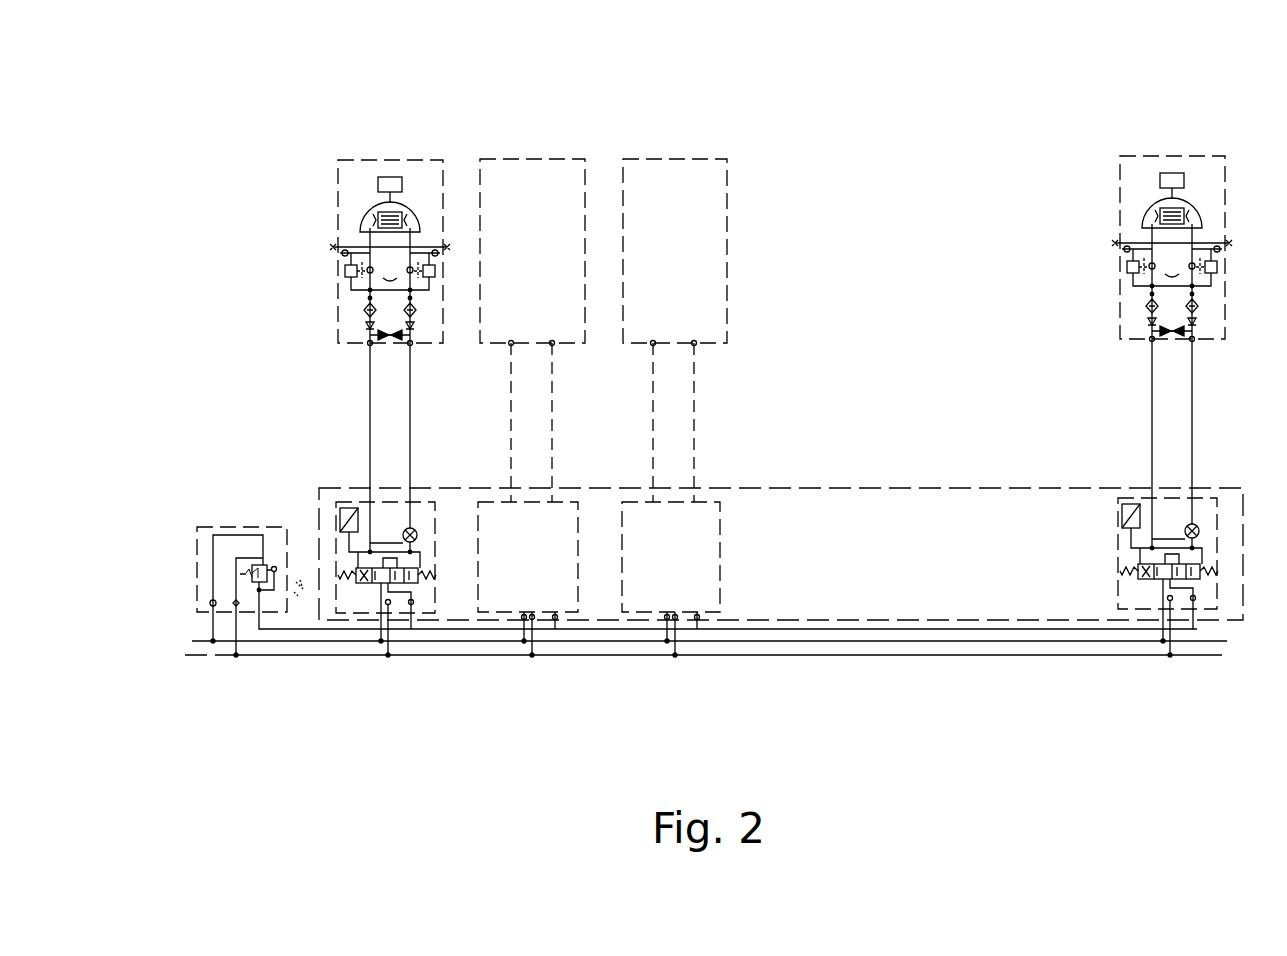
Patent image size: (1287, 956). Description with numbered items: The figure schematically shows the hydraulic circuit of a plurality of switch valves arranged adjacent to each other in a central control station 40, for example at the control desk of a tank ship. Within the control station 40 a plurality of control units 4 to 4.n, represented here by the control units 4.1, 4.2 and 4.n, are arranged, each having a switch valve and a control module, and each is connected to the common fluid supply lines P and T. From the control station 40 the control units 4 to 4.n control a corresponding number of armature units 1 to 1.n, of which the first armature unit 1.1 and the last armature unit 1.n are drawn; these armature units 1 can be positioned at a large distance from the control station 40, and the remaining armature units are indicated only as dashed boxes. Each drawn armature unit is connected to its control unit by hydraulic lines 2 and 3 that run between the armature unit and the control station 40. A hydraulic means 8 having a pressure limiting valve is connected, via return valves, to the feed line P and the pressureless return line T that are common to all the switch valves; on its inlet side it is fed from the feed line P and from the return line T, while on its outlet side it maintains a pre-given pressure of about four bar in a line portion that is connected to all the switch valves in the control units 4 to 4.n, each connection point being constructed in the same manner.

The armature unit 1 is at (434, 152).
The armature unit 1.1 is at (387, 182).
The armature unit 1.n is at (1165, 178).
The hydraulic line 2 is at (412, 376).
The hydraulic line 3 is at (369, 400).
The control unit 4 is at (430, 510).
The control unit 4.1 is at (572, 506).
The control unit 4.2 is at (722, 510).
The control unit 4.n is at (1118, 503).
The hydraulic means 8 is at (205, 527).
The central control station 40 is at (810, 487).
The feed line P is at (182, 641).
The return line T is at (210, 657).